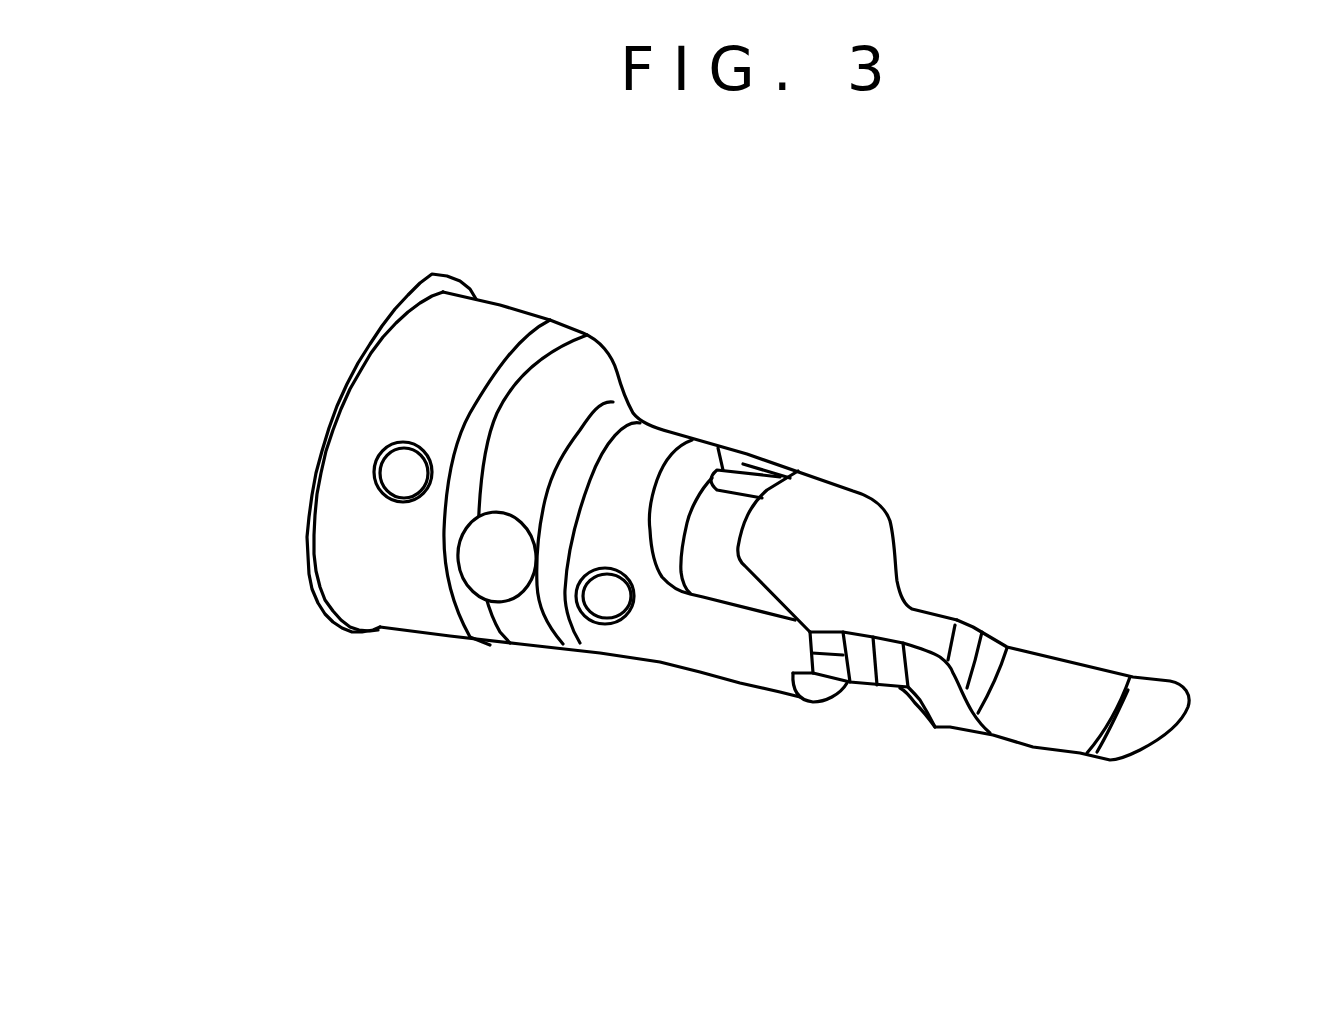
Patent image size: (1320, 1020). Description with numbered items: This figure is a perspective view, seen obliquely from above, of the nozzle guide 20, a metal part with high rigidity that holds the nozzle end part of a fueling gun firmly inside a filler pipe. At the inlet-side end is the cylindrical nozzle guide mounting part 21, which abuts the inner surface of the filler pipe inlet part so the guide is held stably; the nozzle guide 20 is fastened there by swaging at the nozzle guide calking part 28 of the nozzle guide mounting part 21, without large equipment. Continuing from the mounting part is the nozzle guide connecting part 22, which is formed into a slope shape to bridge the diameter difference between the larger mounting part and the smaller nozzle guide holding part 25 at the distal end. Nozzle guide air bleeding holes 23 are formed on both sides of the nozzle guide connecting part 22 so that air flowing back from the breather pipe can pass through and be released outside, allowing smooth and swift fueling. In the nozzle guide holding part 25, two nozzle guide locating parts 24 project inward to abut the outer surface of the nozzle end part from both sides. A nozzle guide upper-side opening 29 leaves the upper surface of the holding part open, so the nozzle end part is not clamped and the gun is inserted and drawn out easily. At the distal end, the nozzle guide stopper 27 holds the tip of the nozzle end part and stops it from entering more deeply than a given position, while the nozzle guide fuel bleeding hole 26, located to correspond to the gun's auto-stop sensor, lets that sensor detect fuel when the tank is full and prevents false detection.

The nozzle guide 20 is at (762, 410).
The nozzle guide mounting part 21 is at (473, 333).
The nozzle guide connecting part 22 is at (525, 630).
The nozzle guide air bleeding hole 23 is at (493, 560).
The nozzle guide locating part 24 is at (607, 600).
The nozzle guide holding part 25 is at (755, 658).
The nozzle guide fuel bleeding hole 26 is at (880, 703).
The nozzle guide stopper 27 is at (1147, 713).
The nozzle guide calking part 28 is at (400, 472).
The nozzle guide upper-side opening 29 is at (815, 540).